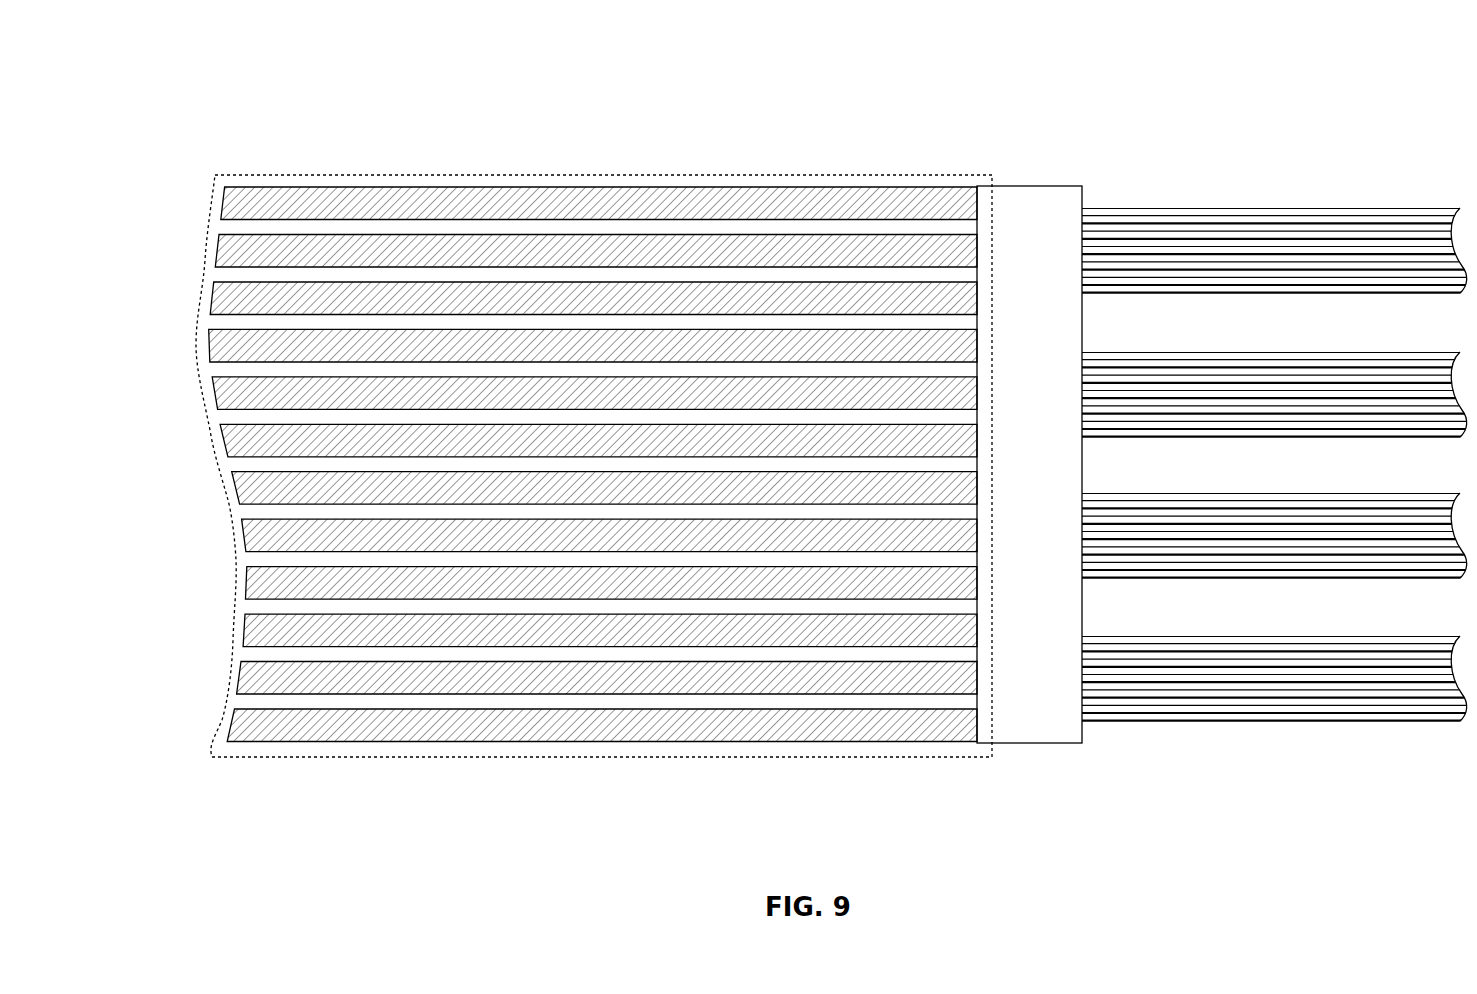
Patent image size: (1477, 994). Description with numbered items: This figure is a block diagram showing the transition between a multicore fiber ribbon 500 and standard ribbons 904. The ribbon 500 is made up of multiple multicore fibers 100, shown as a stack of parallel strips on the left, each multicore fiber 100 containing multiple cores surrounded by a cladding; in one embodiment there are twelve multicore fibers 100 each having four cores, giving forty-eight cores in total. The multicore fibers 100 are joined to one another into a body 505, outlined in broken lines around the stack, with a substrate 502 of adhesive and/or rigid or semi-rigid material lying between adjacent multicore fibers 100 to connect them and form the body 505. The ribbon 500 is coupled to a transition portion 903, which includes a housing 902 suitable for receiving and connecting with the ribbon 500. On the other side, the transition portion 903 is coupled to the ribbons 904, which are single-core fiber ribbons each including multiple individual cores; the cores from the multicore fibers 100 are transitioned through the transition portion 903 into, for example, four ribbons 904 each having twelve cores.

The ribbon 500 is at (243, 103).
The multicore fiber 100 is at (221, 206).
The substrate 502 is at (239, 229).
The body 505 is at (992, 757).
The transition portion 903 is at (1041, 103).
The housing 902 is at (1052, 476).
The ribbon 904 is at (1300, 191).